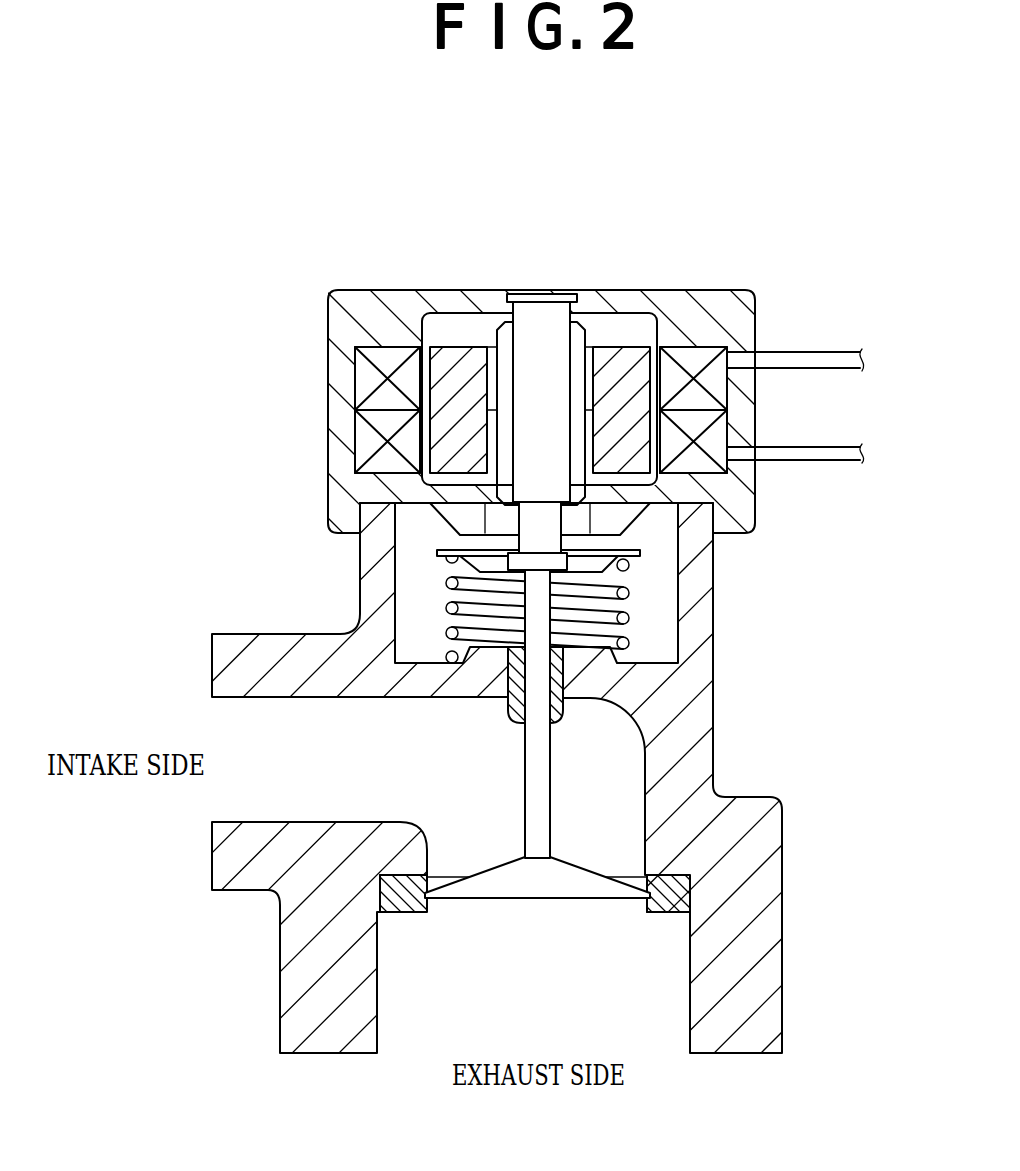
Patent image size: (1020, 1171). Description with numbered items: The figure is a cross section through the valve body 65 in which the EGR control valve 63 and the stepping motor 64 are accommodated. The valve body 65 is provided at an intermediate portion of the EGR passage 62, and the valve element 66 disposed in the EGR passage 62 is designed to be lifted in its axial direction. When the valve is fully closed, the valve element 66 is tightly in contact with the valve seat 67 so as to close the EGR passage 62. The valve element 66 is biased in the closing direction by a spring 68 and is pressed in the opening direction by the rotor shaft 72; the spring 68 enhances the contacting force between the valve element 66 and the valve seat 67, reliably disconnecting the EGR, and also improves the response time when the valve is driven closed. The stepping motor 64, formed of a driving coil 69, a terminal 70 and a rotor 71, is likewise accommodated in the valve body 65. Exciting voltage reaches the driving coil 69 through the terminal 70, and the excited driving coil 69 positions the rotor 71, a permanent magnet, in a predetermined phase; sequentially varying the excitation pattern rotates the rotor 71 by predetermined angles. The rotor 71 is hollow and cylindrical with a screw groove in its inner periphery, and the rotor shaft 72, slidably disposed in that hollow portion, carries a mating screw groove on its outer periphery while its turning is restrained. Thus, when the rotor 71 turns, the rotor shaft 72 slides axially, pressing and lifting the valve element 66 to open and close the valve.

The EGR passage 62 is at (640, 840).
The EGR control valve 63 is at (258, 918).
The stepping motor 64 is at (752, 272).
The valve body 65 is at (700, 715).
The valve element 66 is at (503, 877).
The valve seat 67 is at (403, 887).
The spring 68 is at (627, 592).
The driving coil 69 is at (370, 375).
The terminal 70 is at (838, 352).
The rotor 71 is at (458, 350).
The rotor shaft 72 is at (553, 313).